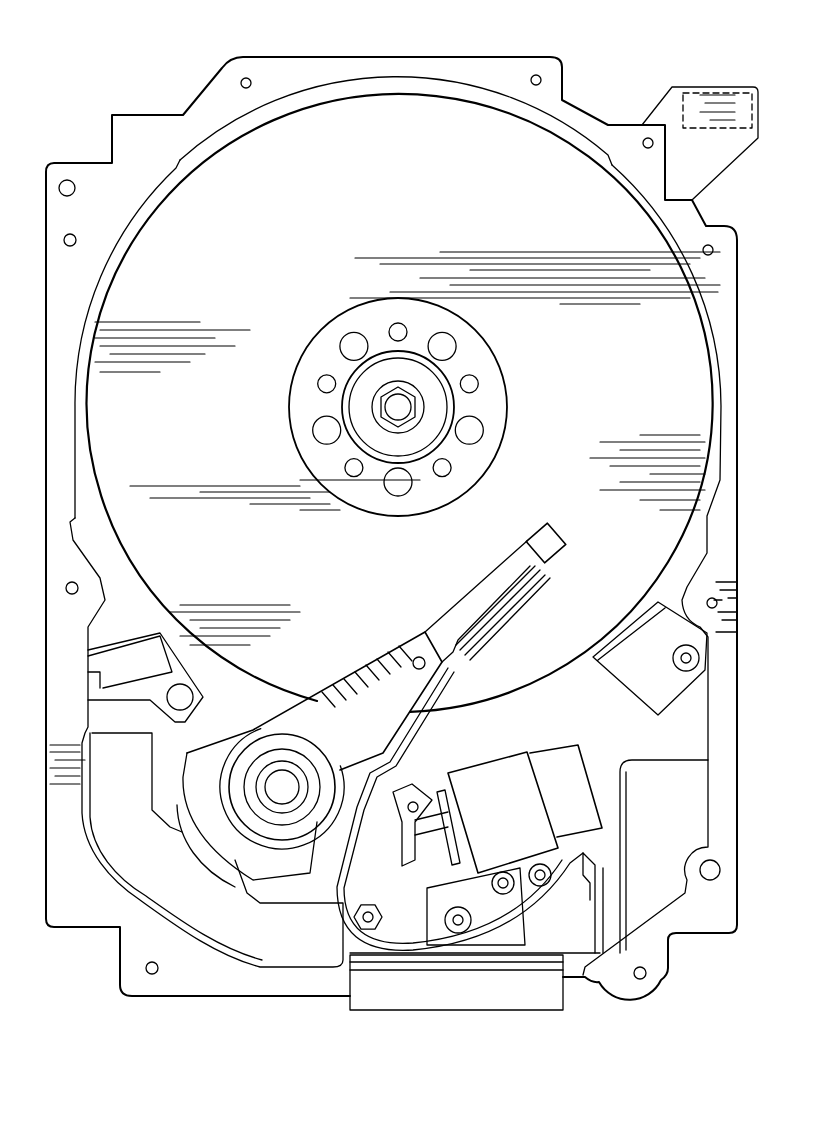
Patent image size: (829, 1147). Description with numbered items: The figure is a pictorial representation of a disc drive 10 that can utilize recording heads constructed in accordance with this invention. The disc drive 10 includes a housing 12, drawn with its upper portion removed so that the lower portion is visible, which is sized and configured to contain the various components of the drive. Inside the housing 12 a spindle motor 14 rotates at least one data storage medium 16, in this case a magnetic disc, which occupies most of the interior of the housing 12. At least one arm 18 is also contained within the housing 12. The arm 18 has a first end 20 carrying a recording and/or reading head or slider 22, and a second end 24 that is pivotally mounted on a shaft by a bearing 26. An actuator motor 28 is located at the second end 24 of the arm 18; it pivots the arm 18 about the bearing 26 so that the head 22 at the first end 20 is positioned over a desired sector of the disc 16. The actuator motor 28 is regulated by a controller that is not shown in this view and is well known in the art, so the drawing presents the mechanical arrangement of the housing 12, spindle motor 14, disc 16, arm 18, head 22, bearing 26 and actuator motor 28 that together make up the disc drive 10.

The disc drive 10 is at (93, 108).
The housing 12 is at (519, 62).
The spindle motor 14 is at (388, 410).
The data storage medium 16 is at (315, 220).
The arm 18 is at (383, 678).
The first end 20 is at (496, 575).
The head 22 is at (548, 544).
The second end 24 is at (305, 730).
The bearing 26 is at (276, 782).
The actuator motor 28 is at (185, 901).